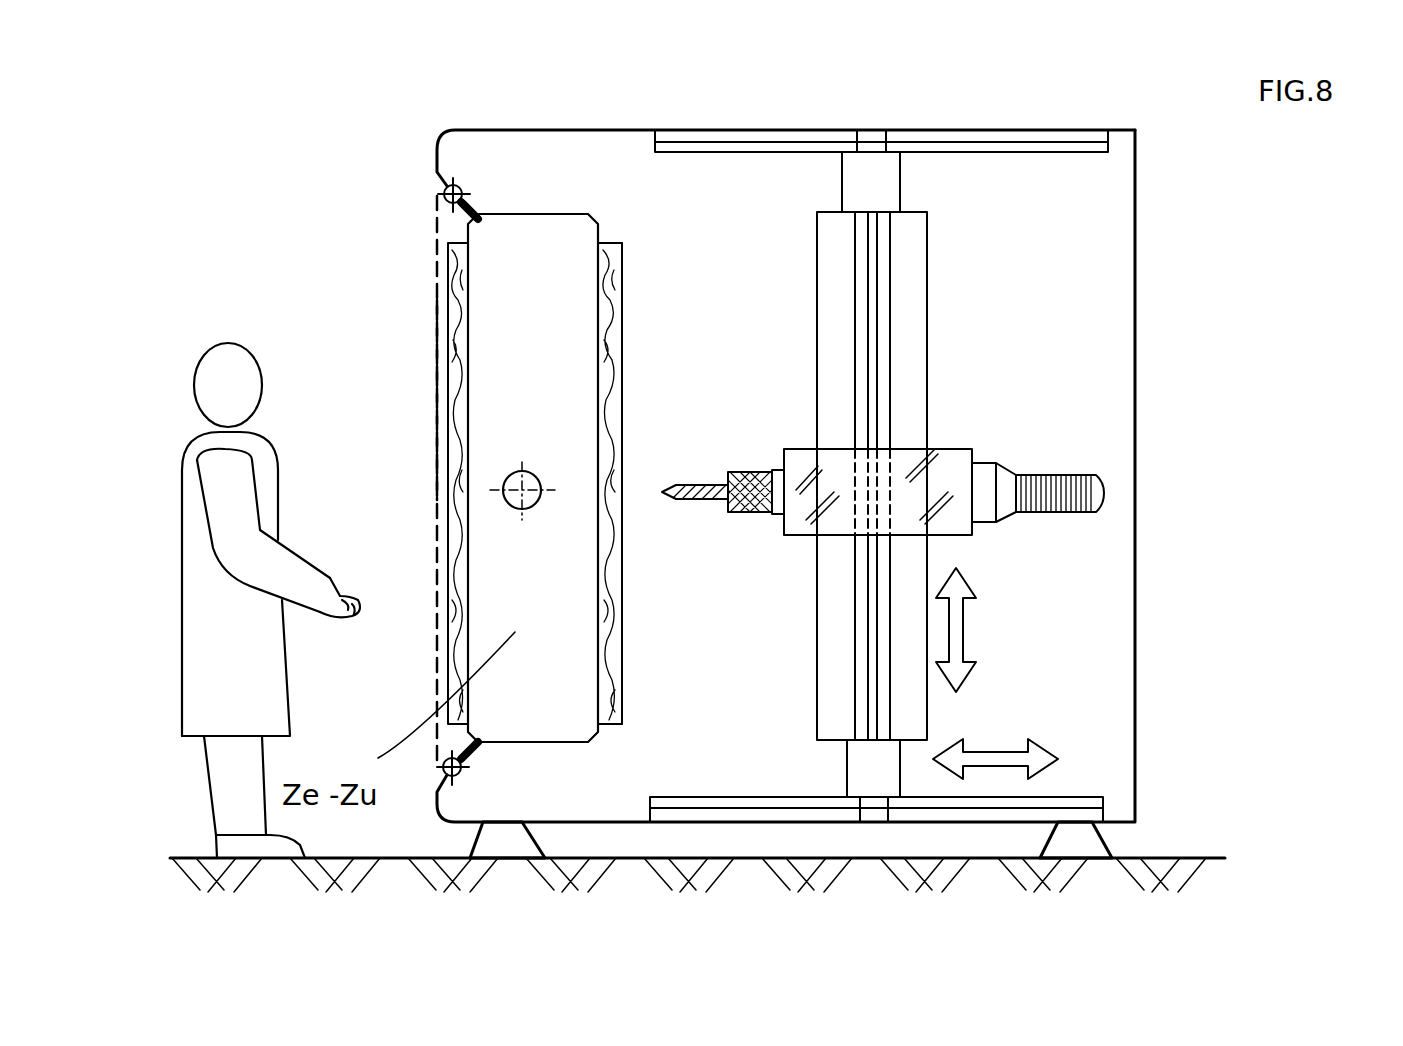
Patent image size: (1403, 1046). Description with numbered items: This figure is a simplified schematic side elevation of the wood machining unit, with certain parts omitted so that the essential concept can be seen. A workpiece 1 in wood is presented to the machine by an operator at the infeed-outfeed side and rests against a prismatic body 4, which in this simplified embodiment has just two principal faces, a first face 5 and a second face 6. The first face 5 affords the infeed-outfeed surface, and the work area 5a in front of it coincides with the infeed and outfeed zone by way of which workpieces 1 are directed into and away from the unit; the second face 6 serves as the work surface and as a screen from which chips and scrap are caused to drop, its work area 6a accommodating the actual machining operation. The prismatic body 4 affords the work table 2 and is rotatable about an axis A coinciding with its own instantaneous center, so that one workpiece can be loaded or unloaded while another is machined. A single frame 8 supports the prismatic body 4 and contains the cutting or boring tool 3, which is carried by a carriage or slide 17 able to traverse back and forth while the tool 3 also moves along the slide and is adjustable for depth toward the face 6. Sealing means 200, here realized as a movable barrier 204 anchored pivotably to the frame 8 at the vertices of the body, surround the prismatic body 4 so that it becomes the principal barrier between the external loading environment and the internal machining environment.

The workpiece 1 is at (608, 590).
The work table 2 is at (432, 334).
The cutting or boring tool 3 is at (668, 492).
The prismatic body 4 is at (519, 568).
The first principal face 5 is at (498, 370).
The first work area 5a is at (432, 398).
The second principal face 6 is at (612, 330).
The second work area 6a is at (612, 410).
The frame 8 is at (548, 130).
The carriage or slide 17 is at (876, 182).
The sealing means 200 is at (436, 184).
The movable barrier 204 is at (462, 217).
The axis of rotation A is at (536, 498).